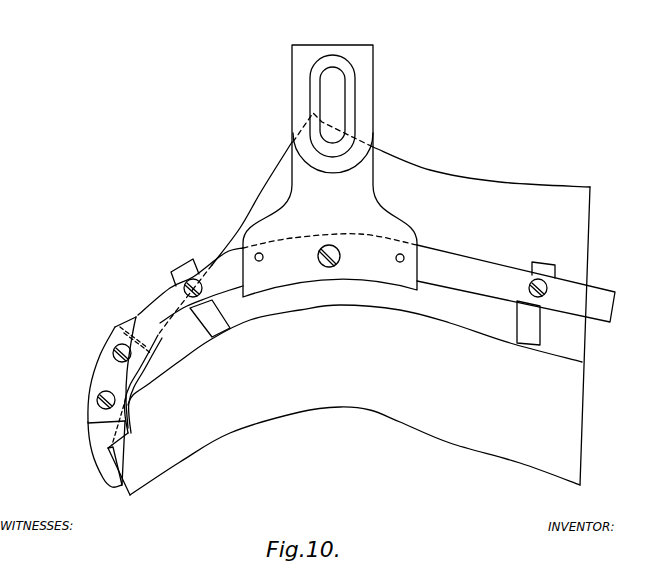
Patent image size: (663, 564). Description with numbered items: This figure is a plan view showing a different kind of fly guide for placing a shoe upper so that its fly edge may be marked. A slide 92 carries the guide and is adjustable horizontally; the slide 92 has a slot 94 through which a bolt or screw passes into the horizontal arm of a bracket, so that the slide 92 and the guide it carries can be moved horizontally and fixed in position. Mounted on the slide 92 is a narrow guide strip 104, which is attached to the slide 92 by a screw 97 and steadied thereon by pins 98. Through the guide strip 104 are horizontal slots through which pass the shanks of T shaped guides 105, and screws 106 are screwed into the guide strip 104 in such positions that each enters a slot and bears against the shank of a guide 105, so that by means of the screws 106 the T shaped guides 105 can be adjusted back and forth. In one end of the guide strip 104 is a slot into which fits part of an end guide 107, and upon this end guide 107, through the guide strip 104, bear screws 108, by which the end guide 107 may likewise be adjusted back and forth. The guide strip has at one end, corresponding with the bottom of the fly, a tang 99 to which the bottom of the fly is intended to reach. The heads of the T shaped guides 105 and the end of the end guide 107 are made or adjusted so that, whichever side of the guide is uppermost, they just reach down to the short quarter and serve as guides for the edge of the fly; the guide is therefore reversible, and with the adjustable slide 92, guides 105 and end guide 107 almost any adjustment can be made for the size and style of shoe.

The slide 92 is at (294, 123).
The slot 94 is at (340, 100).
The screw 97 is at (328, 245).
The pins 98 is at (262, 260).
The tang 99 is at (108, 469).
The guide strip 104 is at (452, 257).
The T shaped guides 105 is at (230, 314).
The screws 106 is at (194, 278).
The end guide 107 is at (132, 433).
The screws 108 is at (101, 396).